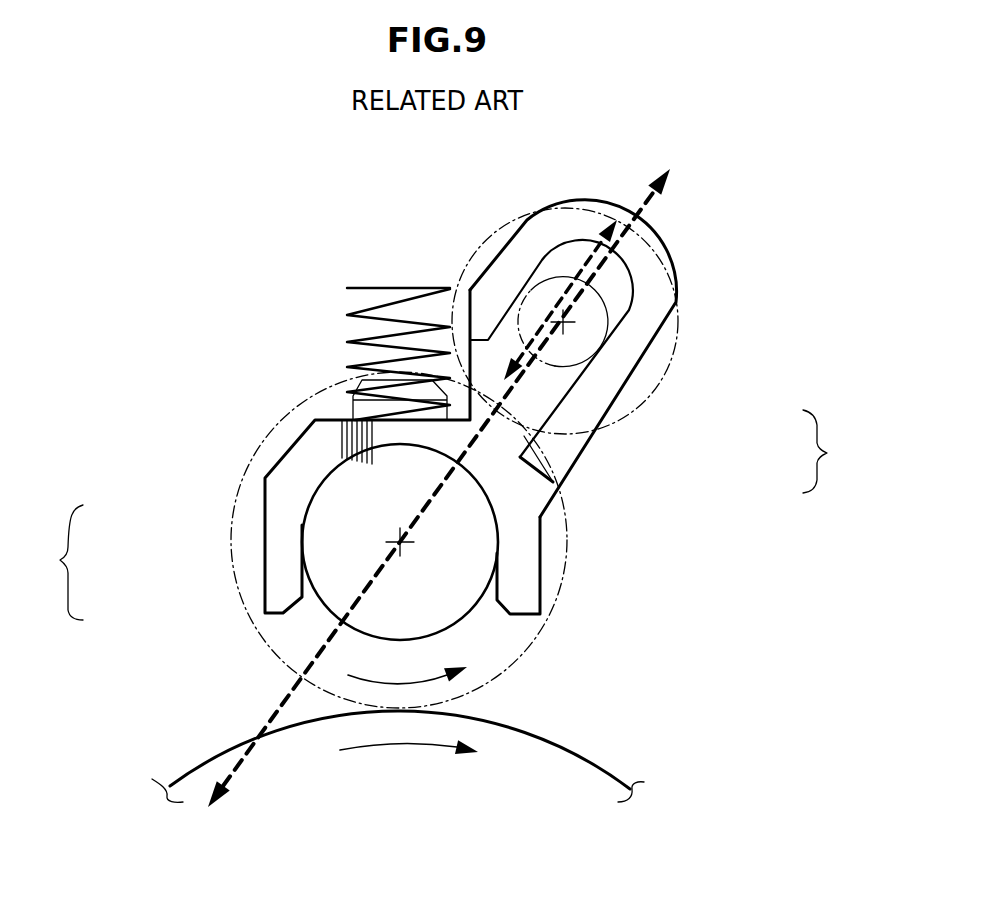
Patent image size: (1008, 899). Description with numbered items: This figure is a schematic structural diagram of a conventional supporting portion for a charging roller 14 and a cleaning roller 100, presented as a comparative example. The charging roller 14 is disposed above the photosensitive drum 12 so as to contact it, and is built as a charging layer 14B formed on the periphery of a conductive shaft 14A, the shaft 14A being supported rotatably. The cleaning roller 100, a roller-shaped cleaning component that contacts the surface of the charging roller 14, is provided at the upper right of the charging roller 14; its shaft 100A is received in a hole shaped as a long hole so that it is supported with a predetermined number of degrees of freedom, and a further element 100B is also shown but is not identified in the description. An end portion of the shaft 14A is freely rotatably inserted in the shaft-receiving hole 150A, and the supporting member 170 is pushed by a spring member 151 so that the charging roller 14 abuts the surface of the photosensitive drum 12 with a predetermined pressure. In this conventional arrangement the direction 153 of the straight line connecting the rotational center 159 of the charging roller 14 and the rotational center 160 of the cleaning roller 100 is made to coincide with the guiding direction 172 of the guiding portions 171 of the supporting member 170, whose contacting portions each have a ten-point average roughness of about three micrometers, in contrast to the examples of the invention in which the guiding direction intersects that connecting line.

The photosensitive drum 12 is at (600, 766).
The charging roller 14 is at (47, 562).
The conductive shaft 14A is at (332, 561).
The charging layer 14B is at (231, 535).
The cleaning roller 100 is at (846, 451).
The shaft of the cleaning roller 100A is at (585, 365).
The cleaning member 100B is at (590, 414).
The shaft-receiving hole 150A is at (313, 515).
The spring member 151 is at (363, 313).
The direction of the straight line connecting the rotational centers 153 is at (268, 717).
The rotational center of the charging roller 159 is at (403, 546).
The rotational center of the cleaning roller 160 is at (575, 325).
The supporting member 170 is at (535, 498).
The guiding portions 171 is at (622, 267).
The guiding direction 172 is at (567, 270).